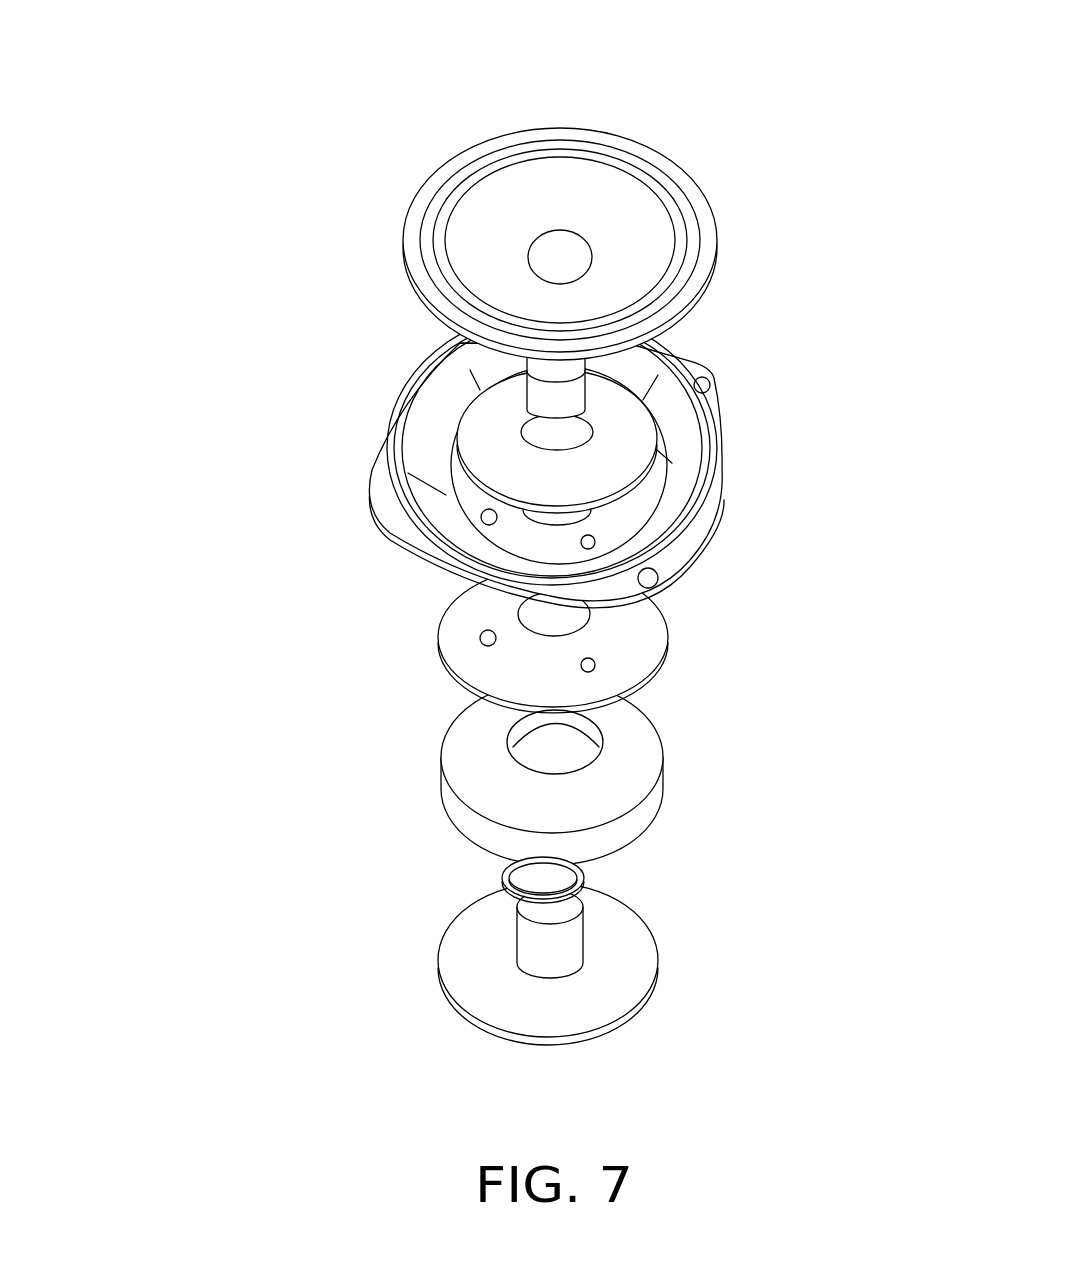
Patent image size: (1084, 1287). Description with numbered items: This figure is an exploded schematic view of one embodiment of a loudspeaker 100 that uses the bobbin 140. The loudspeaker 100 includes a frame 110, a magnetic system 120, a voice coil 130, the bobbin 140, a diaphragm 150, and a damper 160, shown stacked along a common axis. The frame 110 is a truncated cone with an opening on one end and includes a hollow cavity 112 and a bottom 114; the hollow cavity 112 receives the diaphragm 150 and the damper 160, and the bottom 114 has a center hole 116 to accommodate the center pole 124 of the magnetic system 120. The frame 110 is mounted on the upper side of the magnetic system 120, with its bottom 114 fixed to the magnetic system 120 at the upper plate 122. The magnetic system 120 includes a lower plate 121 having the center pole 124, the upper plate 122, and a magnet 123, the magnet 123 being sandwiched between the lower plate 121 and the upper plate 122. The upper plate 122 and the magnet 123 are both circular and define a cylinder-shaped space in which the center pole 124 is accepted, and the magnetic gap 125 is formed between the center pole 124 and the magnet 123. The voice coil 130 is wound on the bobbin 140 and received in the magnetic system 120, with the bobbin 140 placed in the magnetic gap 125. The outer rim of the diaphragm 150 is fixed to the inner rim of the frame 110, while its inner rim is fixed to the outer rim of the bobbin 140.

The loudspeaker 100 is at (421, 60).
The frame 110 is at (677, 552).
The hollow cavity 112 is at (675, 418).
The bottom 114 is at (490, 527).
The center hole 116 is at (568, 522).
The magnetic system 120 is at (287, 633).
The lower plate 121 is at (462, 957).
The upper plate 122 is at (485, 663).
The magnet 123 is at (477, 767).
The center pole 124 is at (532, 935).
The magnetic gap 125 is at (572, 748).
The voice coil 130 is at (585, 875).
The bobbin 140 is at (570, 398).
The diaphragm 150 is at (632, 242).
The damper 160 is at (500, 443).